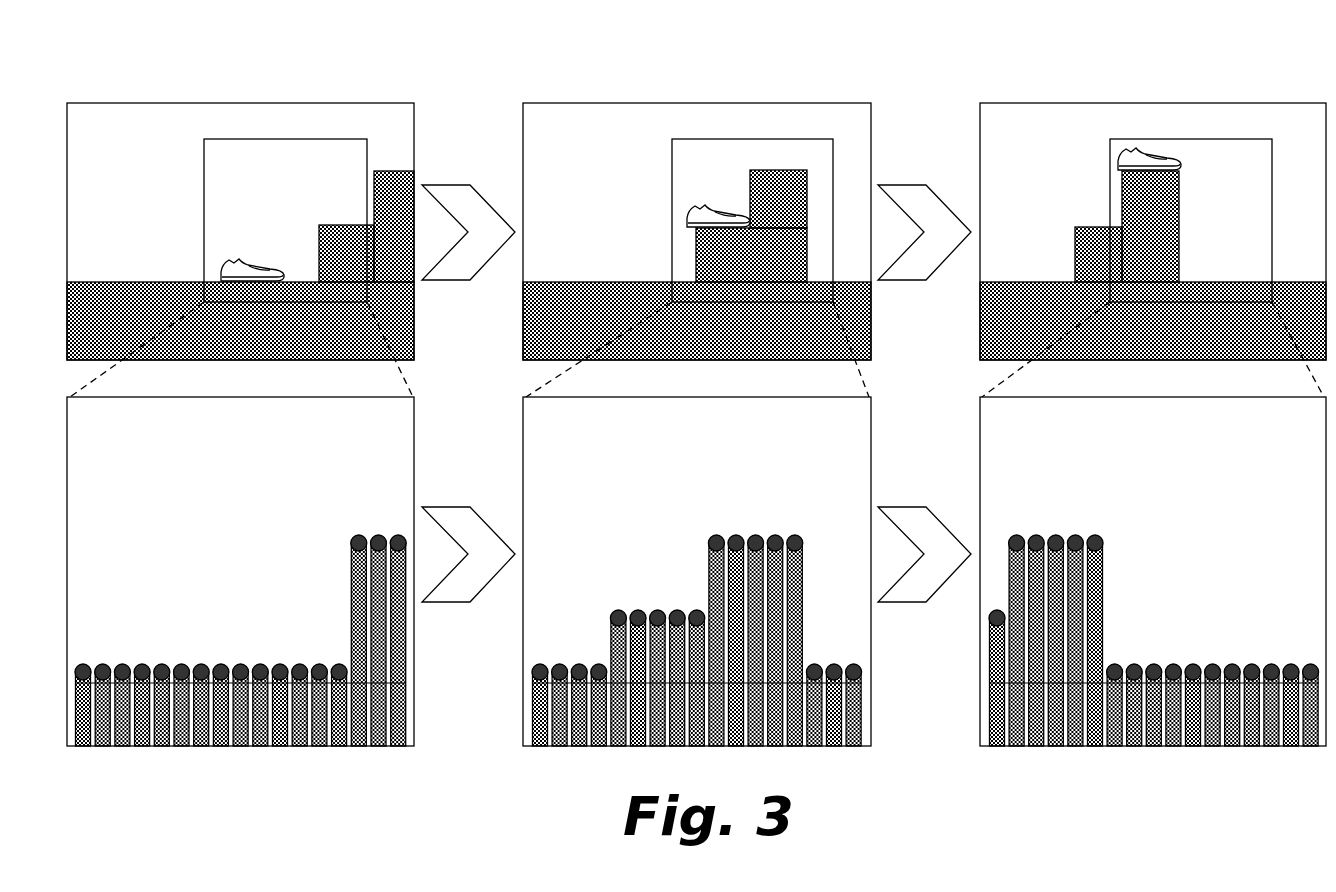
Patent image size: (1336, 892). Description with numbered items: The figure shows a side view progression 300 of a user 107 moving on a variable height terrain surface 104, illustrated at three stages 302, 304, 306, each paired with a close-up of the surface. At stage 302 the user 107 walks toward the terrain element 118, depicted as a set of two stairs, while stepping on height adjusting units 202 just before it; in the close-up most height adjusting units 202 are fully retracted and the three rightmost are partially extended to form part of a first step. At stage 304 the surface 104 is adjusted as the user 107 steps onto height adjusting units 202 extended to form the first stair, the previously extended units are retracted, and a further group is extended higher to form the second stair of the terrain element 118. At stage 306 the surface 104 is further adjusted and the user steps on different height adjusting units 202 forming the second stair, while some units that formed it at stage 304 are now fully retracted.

The side view progression 300 is at (150, 62).
The stage 302 is at (132, 145).
The stage 304 is at (588, 145).
The stage 306 is at (1047, 146).
The variable height terrain surface 104 is at (170, 281).
The user 107 is at (232, 268).
The terrain element 118 is at (359, 270).
The height adjusting units 202 is at (352, 620).